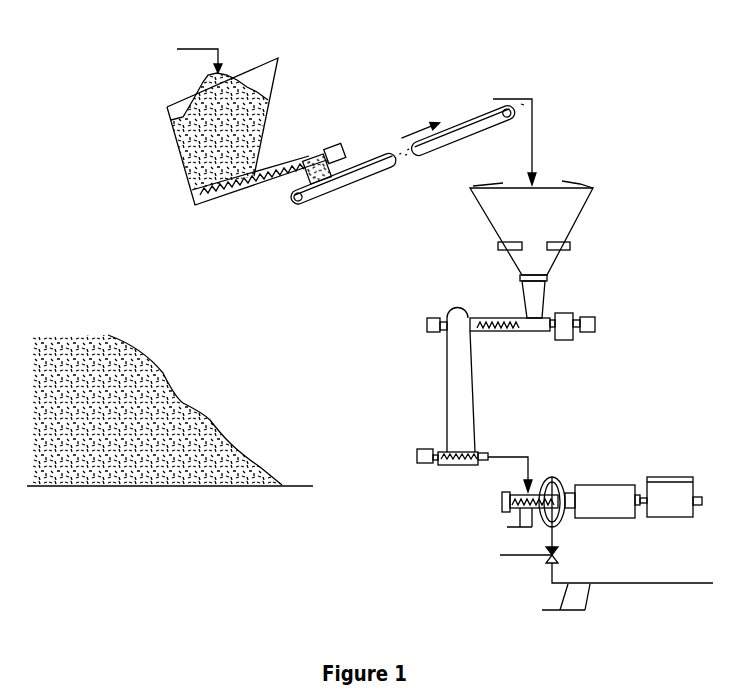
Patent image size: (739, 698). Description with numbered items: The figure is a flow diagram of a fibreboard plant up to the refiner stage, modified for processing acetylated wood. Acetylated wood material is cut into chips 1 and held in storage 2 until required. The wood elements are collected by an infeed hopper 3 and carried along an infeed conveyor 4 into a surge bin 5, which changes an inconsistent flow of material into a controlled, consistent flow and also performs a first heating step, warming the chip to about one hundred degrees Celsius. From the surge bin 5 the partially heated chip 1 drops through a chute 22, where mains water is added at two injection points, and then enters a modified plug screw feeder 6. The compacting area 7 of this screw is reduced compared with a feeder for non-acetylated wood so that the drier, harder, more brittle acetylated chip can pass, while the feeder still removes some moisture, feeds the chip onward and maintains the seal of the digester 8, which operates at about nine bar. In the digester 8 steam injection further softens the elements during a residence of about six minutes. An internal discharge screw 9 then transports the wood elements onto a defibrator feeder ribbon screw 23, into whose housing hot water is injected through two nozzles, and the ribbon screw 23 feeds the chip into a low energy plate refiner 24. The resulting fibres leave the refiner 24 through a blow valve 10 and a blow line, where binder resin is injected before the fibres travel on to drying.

The chips 1 is at (190, 49).
The storage 2 is at (121, 477).
The infeed hopper 3 is at (192, 190).
The infeed conveyor 4 is at (373, 171).
The surge bin 5 is at (550, 212).
The chute 22 is at (537, 295).
The compacting area 7 is at (500, 318).
The plug screw feeder 6 is at (567, 323).
The digester 8 is at (457, 392).
The internal discharge screw 9 is at (455, 450).
The defibrator feeder ribbon screw 23 is at (502, 502).
The low energy plate refiner 24 is at (557, 488).
The blow valve 10 is at (680, 583).